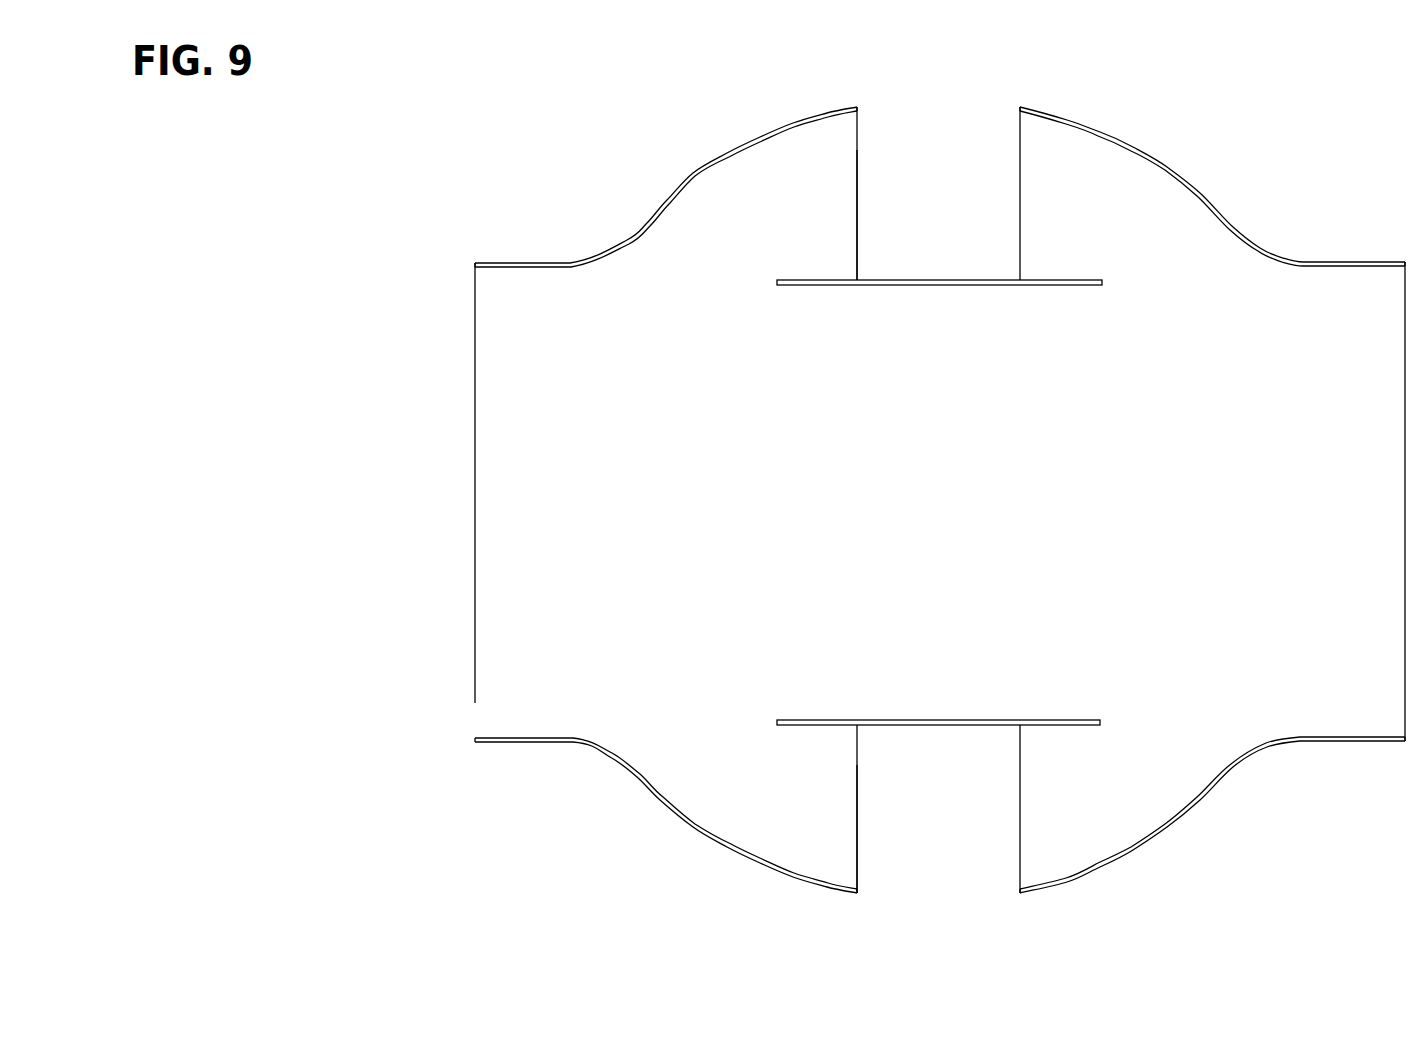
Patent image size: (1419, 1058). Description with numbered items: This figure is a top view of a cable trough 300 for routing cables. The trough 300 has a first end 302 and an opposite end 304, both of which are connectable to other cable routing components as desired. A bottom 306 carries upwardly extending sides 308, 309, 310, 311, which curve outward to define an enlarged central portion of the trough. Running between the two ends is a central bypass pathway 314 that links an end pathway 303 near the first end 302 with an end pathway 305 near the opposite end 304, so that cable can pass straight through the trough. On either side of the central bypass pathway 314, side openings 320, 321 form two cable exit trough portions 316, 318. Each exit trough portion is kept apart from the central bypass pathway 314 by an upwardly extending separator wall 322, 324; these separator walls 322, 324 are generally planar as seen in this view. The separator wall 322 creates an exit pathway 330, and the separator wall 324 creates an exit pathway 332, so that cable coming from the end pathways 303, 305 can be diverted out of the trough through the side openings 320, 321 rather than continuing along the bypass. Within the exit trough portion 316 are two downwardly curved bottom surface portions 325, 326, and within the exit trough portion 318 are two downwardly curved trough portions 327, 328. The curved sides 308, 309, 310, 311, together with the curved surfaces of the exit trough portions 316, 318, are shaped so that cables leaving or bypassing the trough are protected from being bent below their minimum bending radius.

The trough 300 is at (1312, 180).
The first end 302 is at (475, 476).
The end pathway 303 is at (553, 597).
The opposite end 304 is at (1403, 483).
The end pathway 305 is at (1283, 643).
The bottom 306 is at (1192, 379).
The upwardly extending side 308 is at (1137, 147).
The upwardly extending side 309 is at (717, 165).
The upwardly extending side 310 is at (1133, 857).
The upwardly extending side 311 is at (716, 840).
The central bypass pathway 314 is at (970, 493).
The cable exit trough portion 316 is at (857, 150).
The cable exit trough portion 318 is at (857, 765).
The side opening 320 is at (857, 217).
The side opening 321 is at (857, 843).
The separator wall 322 is at (1052, 285).
The separator wall 324 is at (1047, 720).
The downwardly curved bottom surface portion 325 is at (1058, 221).
The downwardly curved bottom surface portion 326 is at (782, 270).
The downwardly curved trough portion 327 is at (1100, 818).
The downwardly curved trough portion 328 is at (838, 852).
The exit pathway 330 is at (717, 220).
The exit pathway 332 is at (753, 785).